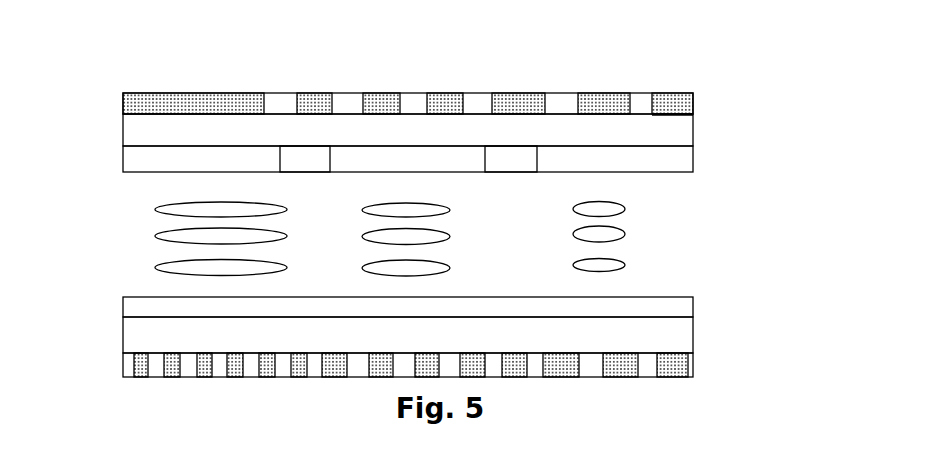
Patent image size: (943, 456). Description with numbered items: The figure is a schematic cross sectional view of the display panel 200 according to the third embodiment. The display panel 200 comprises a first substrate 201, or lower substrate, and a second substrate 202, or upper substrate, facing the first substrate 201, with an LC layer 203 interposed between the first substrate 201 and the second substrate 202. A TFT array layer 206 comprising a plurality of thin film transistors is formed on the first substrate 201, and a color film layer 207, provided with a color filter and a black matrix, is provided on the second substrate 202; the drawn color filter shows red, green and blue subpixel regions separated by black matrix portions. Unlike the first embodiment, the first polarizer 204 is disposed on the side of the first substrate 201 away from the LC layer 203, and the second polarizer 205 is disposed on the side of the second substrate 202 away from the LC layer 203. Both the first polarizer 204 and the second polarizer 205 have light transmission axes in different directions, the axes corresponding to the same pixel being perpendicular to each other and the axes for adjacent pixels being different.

The display panel 200 is at (172, 70).
The first substrate 201 is at (693, 333).
The second substrate 202 is at (693, 135).
The LC layer 203 is at (668, 238).
The first polarizer 204 is at (693, 359).
The second polarizer 205 is at (693, 106).
The TFT array layer 206 is at (685, 308).
The color film layer 207 is at (693, 155).